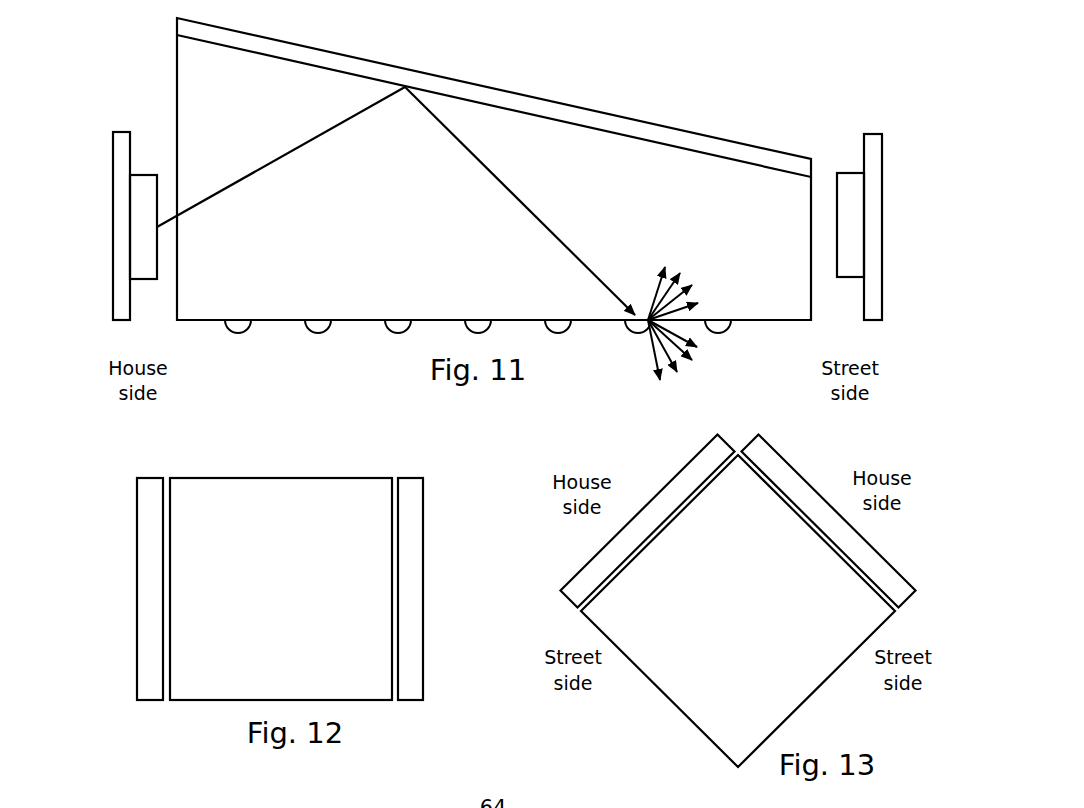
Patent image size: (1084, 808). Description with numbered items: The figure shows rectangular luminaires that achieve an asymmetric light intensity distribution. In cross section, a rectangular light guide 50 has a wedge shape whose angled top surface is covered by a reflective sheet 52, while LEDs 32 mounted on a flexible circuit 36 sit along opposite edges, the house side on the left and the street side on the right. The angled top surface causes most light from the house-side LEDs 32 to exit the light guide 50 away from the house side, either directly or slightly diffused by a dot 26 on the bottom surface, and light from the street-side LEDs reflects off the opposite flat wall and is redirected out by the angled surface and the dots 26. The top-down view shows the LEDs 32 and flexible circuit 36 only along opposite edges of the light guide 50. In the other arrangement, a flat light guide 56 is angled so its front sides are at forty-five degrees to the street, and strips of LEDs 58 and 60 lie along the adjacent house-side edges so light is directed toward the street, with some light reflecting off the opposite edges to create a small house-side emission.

In FIG. 11, the dot 26 is at (563, 331).
In FIG. 11, the LED 32 is at (140, 173).
In FIG. 12, the LED 32 is at (150, 478).
In FIG. 11, the flexible circuit 36 is at (117, 228).
In FIG. 12, the flexible circuit 36 is at (285, 565).
In FIG. 11, the rectangular light guide 50 is at (619, 214).
In FIG. 12, the rectangular light guide 50 is at (271, 593).
In FIG. 11, the reflective sheet 52 is at (603, 113).
In FIG. 13, the light guide 56 is at (734, 613).
In FIG. 13, the strip of LEDs 58 is at (657, 492).
In FIG. 13, the strip of LEDs 60 is at (812, 484).